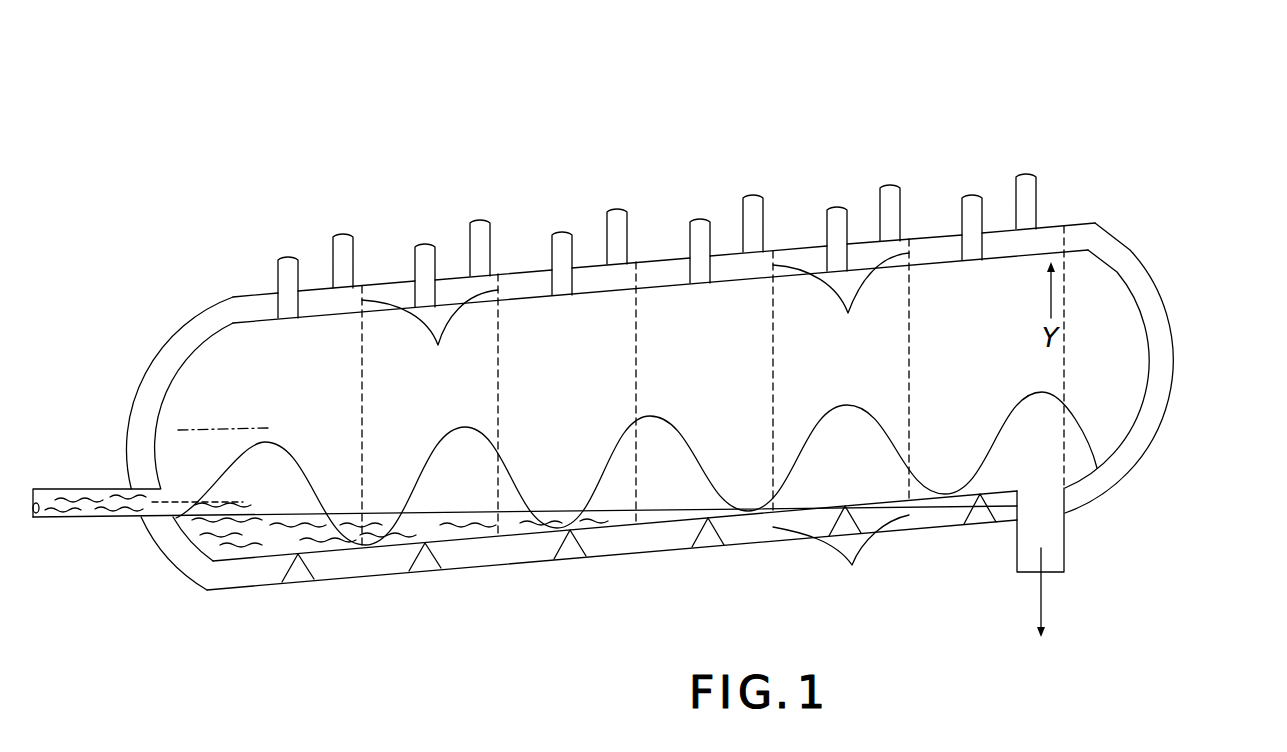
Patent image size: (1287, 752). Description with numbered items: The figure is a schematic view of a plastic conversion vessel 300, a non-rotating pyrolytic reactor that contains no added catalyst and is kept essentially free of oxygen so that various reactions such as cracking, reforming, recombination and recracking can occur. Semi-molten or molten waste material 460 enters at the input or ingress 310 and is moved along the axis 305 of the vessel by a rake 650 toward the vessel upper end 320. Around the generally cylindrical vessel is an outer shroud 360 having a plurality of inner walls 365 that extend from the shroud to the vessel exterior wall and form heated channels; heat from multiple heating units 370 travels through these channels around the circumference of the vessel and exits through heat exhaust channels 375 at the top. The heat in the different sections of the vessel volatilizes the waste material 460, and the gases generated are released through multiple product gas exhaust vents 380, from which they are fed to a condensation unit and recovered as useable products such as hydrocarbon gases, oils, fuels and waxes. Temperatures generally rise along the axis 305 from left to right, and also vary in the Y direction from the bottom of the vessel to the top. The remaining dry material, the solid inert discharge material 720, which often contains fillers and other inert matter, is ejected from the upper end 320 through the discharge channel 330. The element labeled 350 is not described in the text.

The plastic conversion vessel 300 is at (700, 112).
The axis 305 is at (240, 428).
The input or ingress 310 is at (170, 499).
The vessel upper end 320 is at (1105, 423).
The discharge channel 330 is at (1067, 513).
The bottom wall 350 is at (708, 515).
The outer shroud 360 is at (243, 312).
The inner walls 365 is at (635, 428).
The heating units 370 is at (300, 583).
The heat exhaust channels 375 is at (353, 240).
The product gas exhaust vents 380 is at (288, 322).
The waste material 460 is at (245, 553).
The rake 650 is at (688, 430).
The solid inert discharge material 720 is at (1042, 591).